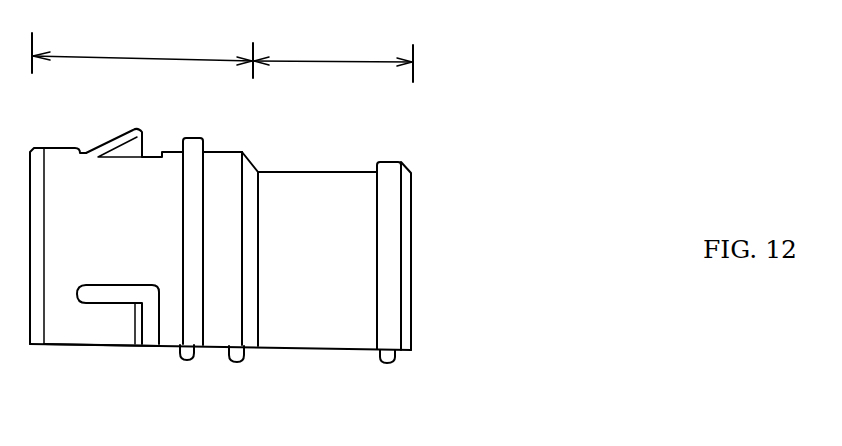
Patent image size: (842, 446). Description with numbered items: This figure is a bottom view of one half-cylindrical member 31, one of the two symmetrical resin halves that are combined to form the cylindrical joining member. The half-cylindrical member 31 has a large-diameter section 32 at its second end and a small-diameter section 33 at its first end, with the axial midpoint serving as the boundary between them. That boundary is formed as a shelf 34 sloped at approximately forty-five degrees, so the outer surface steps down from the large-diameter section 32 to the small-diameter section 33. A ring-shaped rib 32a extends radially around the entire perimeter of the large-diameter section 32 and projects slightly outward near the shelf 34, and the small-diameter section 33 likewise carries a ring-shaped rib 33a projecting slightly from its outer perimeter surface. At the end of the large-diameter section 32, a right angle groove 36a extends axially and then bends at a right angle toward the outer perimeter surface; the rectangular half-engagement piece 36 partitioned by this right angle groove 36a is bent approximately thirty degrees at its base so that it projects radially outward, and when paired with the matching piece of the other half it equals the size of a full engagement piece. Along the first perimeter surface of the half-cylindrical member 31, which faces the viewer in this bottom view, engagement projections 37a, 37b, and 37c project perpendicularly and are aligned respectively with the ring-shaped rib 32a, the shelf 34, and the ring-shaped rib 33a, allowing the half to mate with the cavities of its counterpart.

The half-cylindrical member 31 is at (366, 149).
The large-diameter section 32 is at (142, 46).
The small-diameter section 33 is at (333, 54).
The ring-shaped rib 32a is at (190, 137).
The ring-shaped rib 33a is at (403, 162).
The shelf 34 is at (253, 162).
The half-engagement piece 36 is at (107, 345).
The right angle groove 36a is at (157, 322).
The engagement projection 37a is at (187, 360).
The engagement projection 37b is at (238, 362).
The engagement projection 37c is at (387, 363).